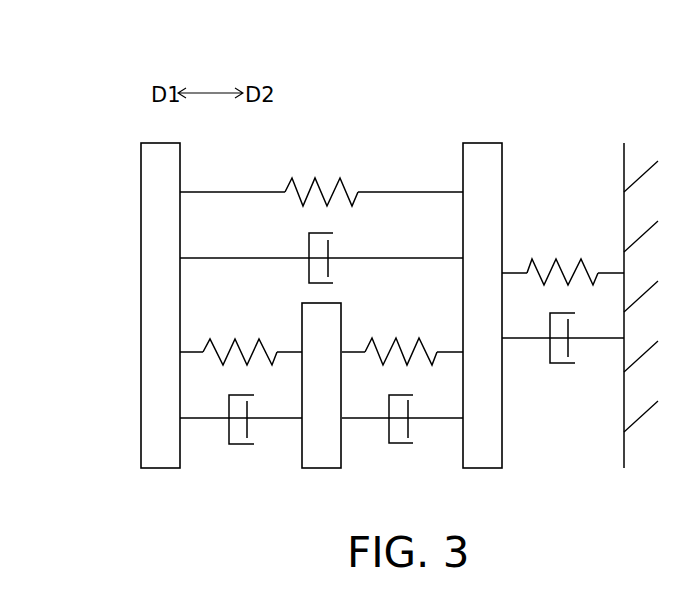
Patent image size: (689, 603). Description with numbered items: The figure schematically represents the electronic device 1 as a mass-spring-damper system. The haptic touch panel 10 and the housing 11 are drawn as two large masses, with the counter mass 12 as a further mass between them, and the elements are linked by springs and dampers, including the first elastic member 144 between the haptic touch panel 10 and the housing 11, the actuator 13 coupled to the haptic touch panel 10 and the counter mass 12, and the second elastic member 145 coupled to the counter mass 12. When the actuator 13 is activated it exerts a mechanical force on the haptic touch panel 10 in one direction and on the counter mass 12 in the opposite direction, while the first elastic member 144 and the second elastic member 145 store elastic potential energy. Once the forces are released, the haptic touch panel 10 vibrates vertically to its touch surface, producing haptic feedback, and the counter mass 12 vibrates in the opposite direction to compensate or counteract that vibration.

The electronic device 1 is at (32, 70).
The haptic touch panel 10 is at (152, 325).
The housing 11 is at (484, 153).
The counter mass 12 is at (323, 463).
The actuator 13 is at (248, 464).
The first elastic member 144 is at (330, 146).
The second elastic member 145 is at (412, 455).